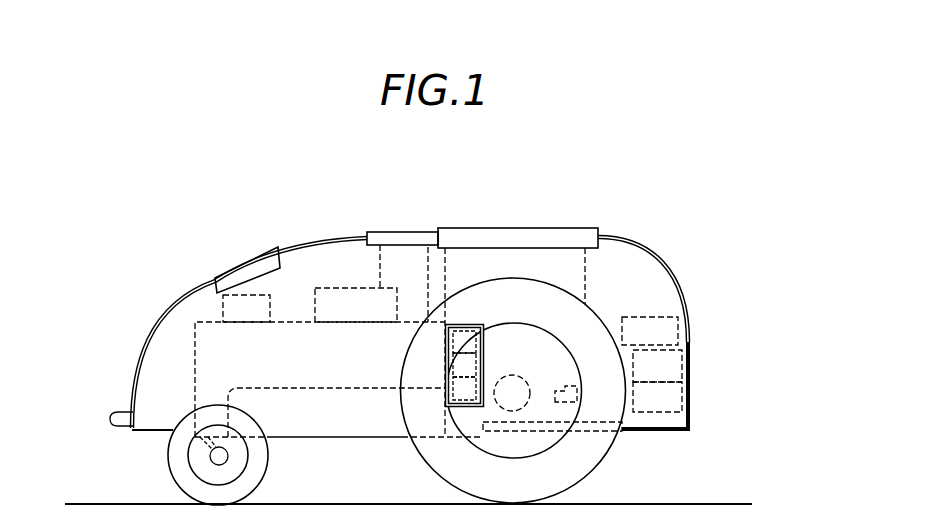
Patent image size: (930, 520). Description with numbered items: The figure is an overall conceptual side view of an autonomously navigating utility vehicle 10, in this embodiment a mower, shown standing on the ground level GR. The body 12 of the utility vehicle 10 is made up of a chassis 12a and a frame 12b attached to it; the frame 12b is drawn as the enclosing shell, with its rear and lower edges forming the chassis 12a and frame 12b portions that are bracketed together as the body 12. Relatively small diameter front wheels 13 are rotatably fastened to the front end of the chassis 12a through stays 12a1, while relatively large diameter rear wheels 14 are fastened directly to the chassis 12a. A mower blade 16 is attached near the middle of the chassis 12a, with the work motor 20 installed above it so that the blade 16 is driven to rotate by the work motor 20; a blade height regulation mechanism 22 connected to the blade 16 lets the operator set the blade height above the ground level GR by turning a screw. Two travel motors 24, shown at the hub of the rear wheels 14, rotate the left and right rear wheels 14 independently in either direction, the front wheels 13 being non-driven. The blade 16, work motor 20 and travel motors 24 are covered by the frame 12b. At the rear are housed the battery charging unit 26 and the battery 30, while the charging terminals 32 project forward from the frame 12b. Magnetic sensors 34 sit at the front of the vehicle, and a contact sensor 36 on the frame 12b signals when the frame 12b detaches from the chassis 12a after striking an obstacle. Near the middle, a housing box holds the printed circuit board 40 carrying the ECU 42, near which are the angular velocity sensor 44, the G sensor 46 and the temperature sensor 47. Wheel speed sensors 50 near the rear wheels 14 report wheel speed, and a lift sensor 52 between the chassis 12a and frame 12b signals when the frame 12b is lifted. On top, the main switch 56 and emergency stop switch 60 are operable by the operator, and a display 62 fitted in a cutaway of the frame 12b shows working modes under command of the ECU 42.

The autonomously navigating utility vehicle 10 is at (648, 237).
The body 12 is at (717, 384).
The chassis 12a is at (692, 412).
The frame 12b is at (689, 326).
The stay 12a1 is at (205, 455).
The front wheel 13 is at (172, 478).
The rear wheel 14 is at (421, 465).
The mower blade 16 is at (337, 422).
The electric motor (work motor) 20 is at (359, 360).
The blade height regulation mechanism 22 is at (367, 314).
The travel motor 24 is at (522, 375).
The battery charging unit 26 is at (672, 379).
The battery 30 is at (672, 409).
The charging terminal 32 is at (122, 411).
The magnetic sensor 34 is at (251, 260).
The contact sensor 36 is at (259, 320).
The printed circuit board 40 is at (471, 369).
The ECU 42 is at (445, 333).
The angular velocity sensor 44 is at (445, 366).
The G sensor 46 is at (445, 386).
The temperature sensor 47 is at (455, 405).
The wheel speed sensor 50 is at (574, 384).
The lift sensor 52 is at (662, 342).
The main switch 56 is at (403, 216).
The emergency stop switch 60 is at (405, 232).
The display 62 is at (520, 228).
The ground level GR is at (638, 503).